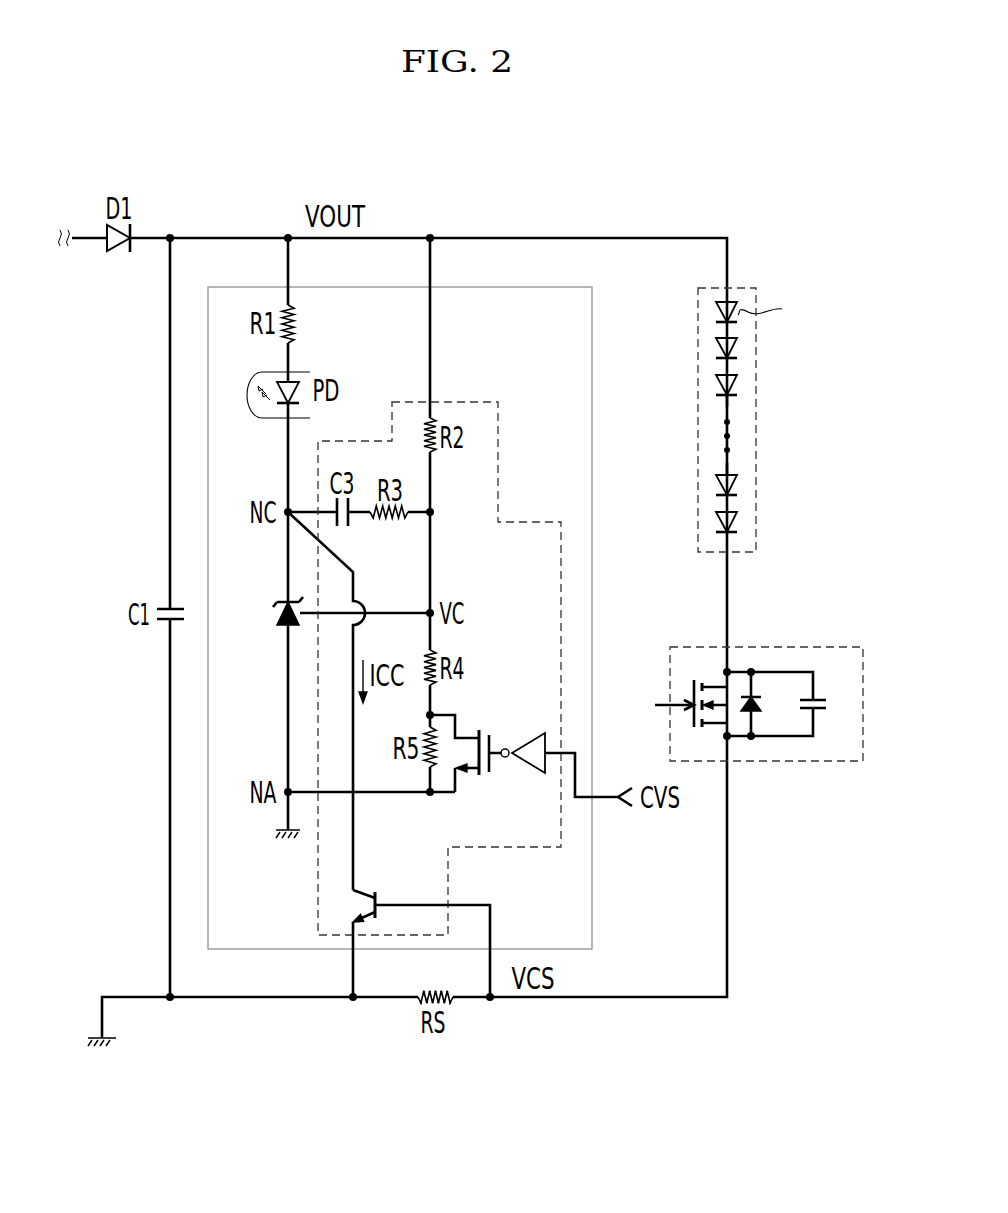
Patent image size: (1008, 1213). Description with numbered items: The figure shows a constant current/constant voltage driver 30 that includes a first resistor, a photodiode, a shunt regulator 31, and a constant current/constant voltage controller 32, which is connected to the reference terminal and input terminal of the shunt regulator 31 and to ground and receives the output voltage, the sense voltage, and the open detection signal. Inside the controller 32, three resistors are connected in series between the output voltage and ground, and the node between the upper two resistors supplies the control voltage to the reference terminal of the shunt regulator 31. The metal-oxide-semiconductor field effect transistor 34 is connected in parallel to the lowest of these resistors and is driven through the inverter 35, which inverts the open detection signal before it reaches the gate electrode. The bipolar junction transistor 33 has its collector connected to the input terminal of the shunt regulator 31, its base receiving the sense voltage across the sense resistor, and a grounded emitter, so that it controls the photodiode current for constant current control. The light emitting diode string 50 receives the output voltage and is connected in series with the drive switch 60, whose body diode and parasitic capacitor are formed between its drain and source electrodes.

The CC/CV driver 30 is at (593, 372).
The shunt regulator 31 is at (277, 604).
The CC/CV controller 32 is at (499, 458).
The BJT 33 is at (364, 890).
The MOSFET 34 is at (486, 728).
The inverter 35 is at (519, 777).
The LED string 50 is at (757, 404).
The LED drive switch 60 is at (813, 646).